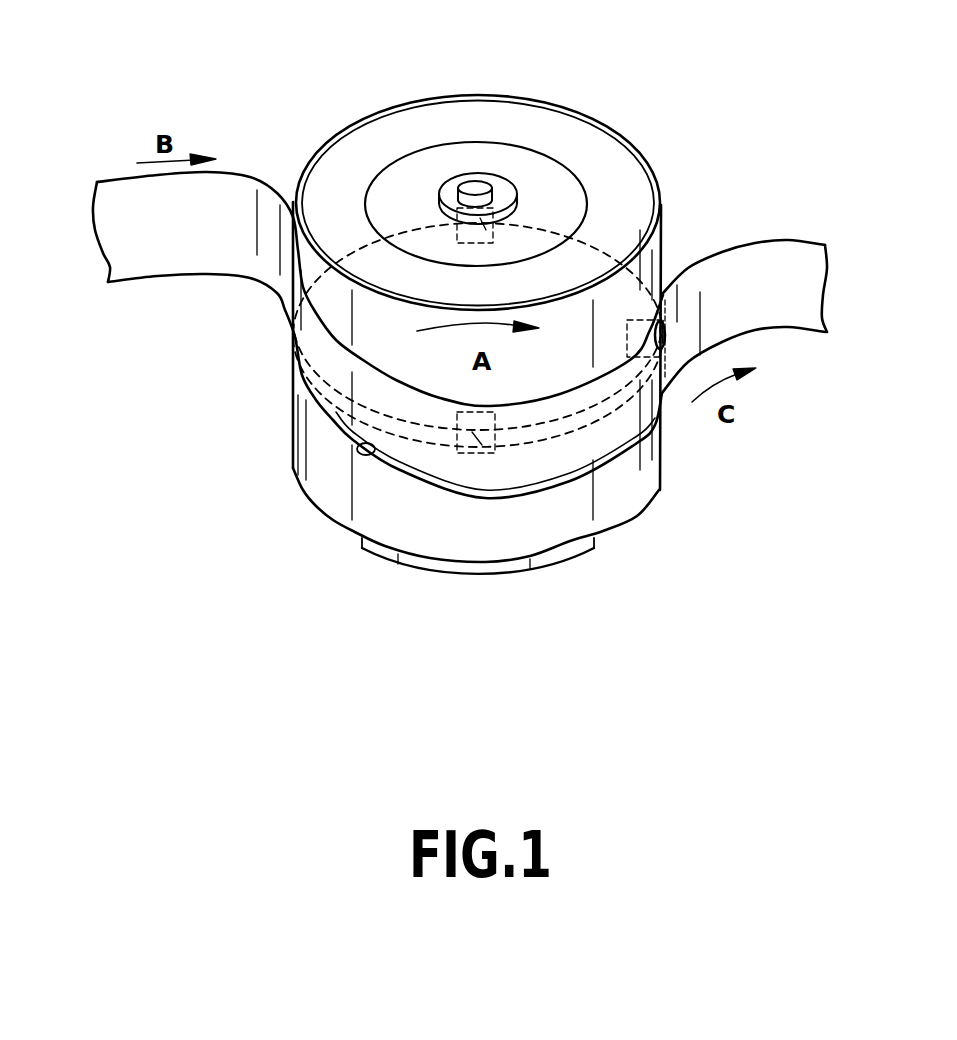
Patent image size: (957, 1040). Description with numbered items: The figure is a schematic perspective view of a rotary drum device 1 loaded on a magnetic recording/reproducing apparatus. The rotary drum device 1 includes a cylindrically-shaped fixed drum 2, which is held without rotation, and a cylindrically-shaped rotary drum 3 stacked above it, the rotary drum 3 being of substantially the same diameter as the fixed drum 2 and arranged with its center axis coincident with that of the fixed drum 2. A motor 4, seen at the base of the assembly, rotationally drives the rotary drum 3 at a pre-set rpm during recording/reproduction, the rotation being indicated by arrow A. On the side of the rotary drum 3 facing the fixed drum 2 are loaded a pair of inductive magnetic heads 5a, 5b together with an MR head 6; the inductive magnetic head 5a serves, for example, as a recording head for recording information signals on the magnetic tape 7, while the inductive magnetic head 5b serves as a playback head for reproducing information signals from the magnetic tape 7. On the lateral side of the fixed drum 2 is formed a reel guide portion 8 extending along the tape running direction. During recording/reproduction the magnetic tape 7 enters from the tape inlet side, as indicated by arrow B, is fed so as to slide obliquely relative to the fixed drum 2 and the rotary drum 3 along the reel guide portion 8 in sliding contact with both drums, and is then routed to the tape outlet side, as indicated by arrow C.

The rotary drum device 1 is at (642, 104).
The fixed drum 2 is at (604, 483).
The rotary drum 3 is at (662, 220).
The motor 4 is at (413, 557).
The inductive magnetic head 5a is at (500, 182).
The inductive magnetic head 5b is at (483, 453).
The MR head 6 is at (640, 313).
The magnetic tape 7 is at (802, 295).
The reel guide portion 8 is at (350, 447).